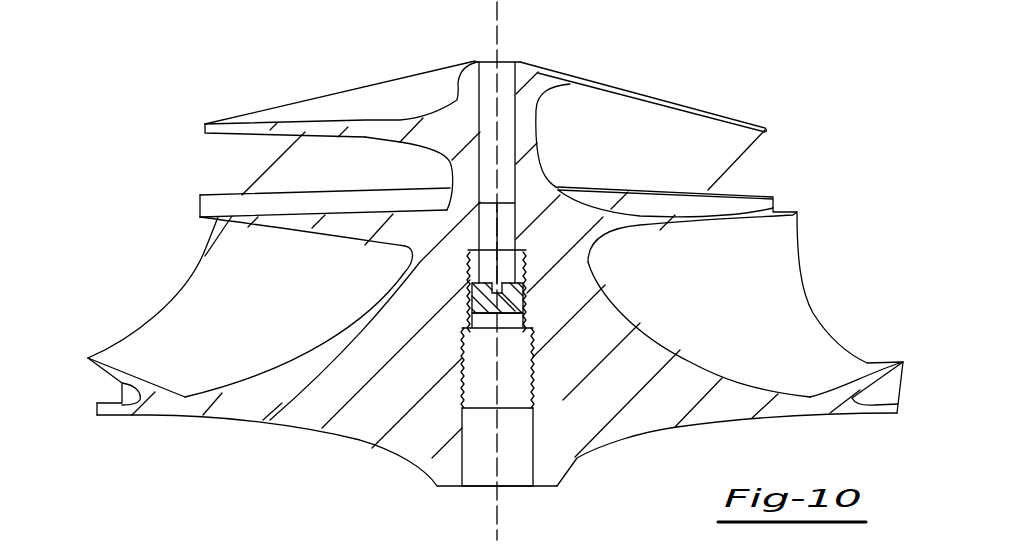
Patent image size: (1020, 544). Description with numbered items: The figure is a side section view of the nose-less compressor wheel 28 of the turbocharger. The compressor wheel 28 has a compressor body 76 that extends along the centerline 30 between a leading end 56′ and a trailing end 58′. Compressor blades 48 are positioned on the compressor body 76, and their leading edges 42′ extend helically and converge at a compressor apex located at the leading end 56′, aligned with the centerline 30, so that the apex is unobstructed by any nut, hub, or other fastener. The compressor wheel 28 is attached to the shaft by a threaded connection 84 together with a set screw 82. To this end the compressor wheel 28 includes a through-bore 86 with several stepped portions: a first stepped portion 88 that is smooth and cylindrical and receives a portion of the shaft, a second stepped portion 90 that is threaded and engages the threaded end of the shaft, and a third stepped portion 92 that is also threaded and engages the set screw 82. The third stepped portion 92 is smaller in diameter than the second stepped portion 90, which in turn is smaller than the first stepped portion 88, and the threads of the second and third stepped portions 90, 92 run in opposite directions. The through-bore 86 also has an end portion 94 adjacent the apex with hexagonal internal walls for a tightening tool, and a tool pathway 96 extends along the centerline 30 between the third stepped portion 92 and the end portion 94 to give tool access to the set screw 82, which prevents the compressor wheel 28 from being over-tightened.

The compressor wheel 28 is at (763, 88).
The centerline 30 is at (500, 6).
The leading edges 42′ is at (332, 101).
The compressor blades 48 is at (283, 167).
The leading end 56′ is at (626, 96).
The trailing end 58′ is at (145, 417).
The compressor body 76 is at (563, 217).
The set screw 82 is at (470, 292).
The threaded connection 84 is at (530, 300).
The through-bore 86 is at (510, 456).
The first stepped portion 88 is at (462, 467).
The second stepped portion 90 is at (461, 378).
The third stepped portion 92 is at (510, 268).
The end portion 94 is at (487, 93).
The tool pathway 96 is at (490, 223).